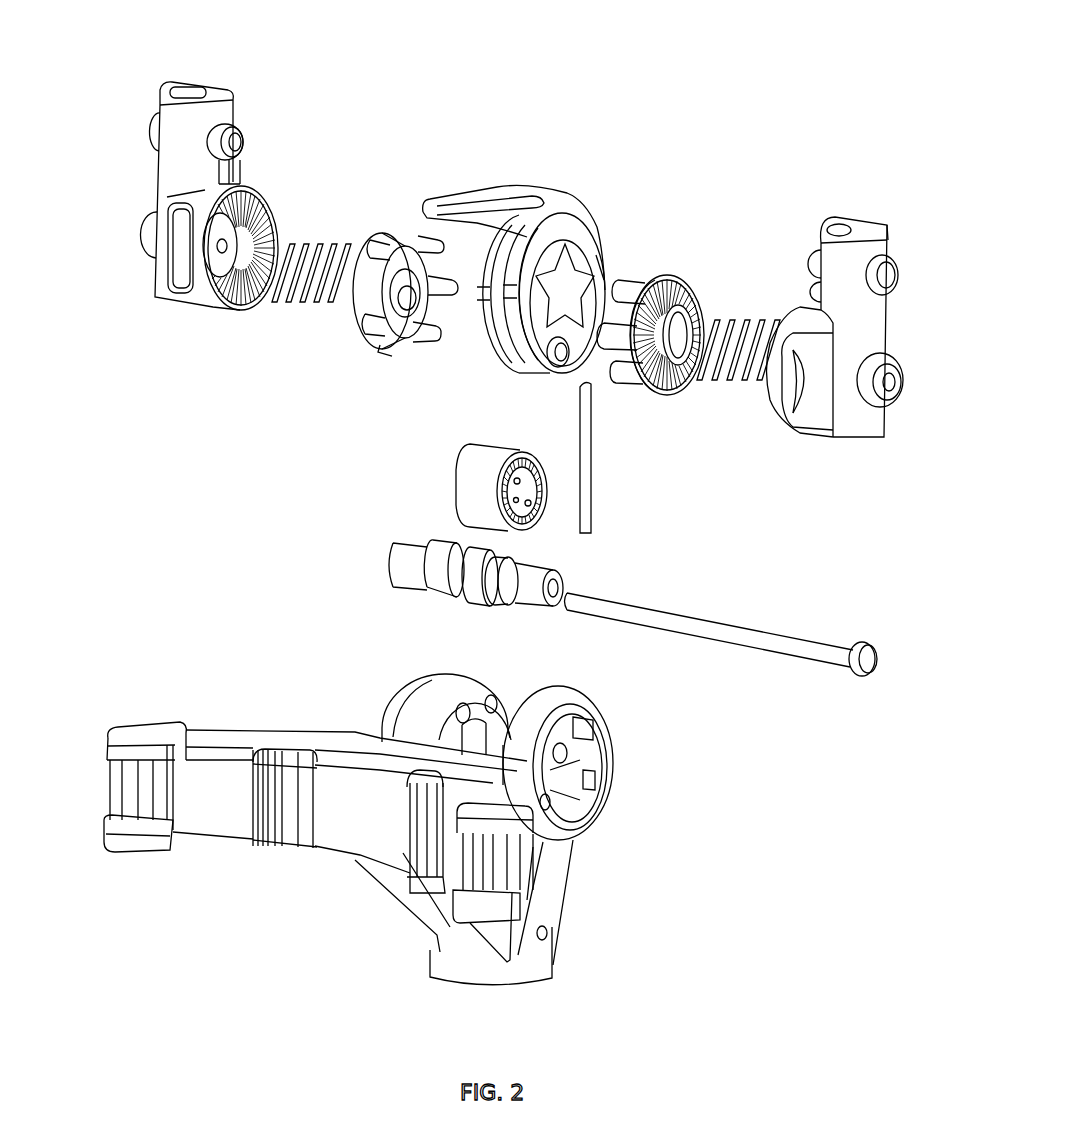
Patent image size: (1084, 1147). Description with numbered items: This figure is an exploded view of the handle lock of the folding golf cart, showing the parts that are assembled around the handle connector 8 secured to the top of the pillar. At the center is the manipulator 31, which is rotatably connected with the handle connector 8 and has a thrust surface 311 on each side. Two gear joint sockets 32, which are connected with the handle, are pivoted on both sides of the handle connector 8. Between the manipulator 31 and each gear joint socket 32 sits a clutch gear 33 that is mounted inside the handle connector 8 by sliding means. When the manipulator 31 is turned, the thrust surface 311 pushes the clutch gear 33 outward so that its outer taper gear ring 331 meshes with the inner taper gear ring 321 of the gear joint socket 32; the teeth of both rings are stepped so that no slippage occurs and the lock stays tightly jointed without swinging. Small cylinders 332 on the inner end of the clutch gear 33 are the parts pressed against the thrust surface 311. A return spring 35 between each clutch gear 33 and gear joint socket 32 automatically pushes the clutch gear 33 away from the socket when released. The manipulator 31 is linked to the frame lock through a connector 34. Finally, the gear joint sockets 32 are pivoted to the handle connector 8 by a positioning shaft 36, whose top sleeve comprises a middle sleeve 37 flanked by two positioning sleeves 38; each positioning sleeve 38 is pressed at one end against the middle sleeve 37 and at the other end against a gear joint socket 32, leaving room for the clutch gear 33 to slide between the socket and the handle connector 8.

The handle connector 8 is at (537, 900).
The manipulator 31 is at (567, 227).
The thrust surface 311 is at (603, 278).
The gear joint socket 32 is at (183, 140).
The inner taper gear ring 321 is at (260, 190).
The clutch gear 33 is at (380, 230).
The outer taper gear ring 331 is at (683, 273).
The small cylinders 332 is at (397, 345).
The connector 34 is at (587, 470).
The return spring 35 is at (274, 300).
The positioning shaft 36 is at (777, 640).
The middle sleeve 37 is at (480, 480).
The positioning sleeve 38 is at (520, 590).